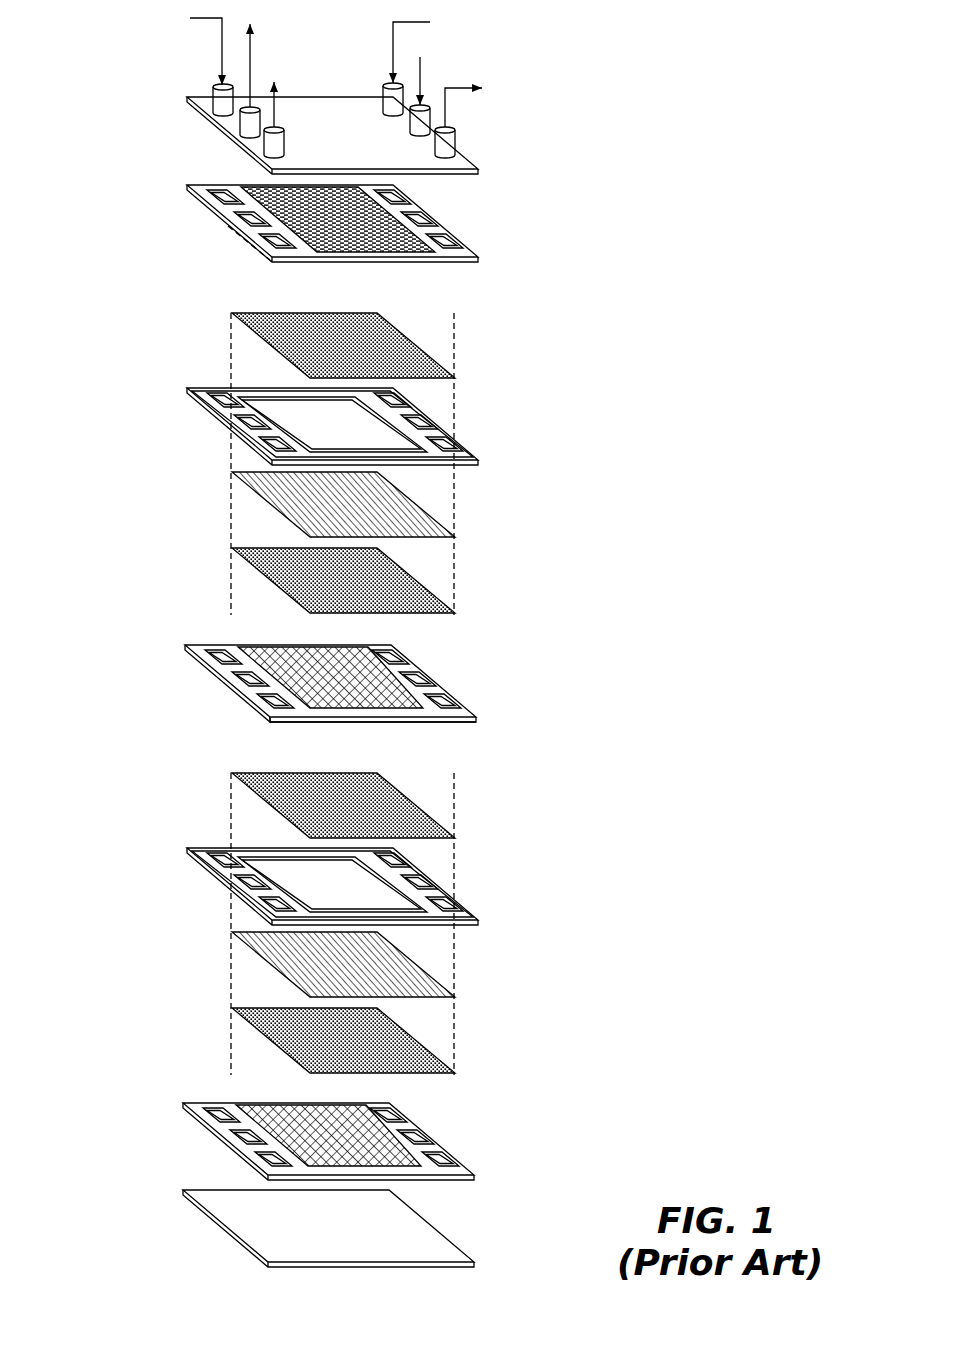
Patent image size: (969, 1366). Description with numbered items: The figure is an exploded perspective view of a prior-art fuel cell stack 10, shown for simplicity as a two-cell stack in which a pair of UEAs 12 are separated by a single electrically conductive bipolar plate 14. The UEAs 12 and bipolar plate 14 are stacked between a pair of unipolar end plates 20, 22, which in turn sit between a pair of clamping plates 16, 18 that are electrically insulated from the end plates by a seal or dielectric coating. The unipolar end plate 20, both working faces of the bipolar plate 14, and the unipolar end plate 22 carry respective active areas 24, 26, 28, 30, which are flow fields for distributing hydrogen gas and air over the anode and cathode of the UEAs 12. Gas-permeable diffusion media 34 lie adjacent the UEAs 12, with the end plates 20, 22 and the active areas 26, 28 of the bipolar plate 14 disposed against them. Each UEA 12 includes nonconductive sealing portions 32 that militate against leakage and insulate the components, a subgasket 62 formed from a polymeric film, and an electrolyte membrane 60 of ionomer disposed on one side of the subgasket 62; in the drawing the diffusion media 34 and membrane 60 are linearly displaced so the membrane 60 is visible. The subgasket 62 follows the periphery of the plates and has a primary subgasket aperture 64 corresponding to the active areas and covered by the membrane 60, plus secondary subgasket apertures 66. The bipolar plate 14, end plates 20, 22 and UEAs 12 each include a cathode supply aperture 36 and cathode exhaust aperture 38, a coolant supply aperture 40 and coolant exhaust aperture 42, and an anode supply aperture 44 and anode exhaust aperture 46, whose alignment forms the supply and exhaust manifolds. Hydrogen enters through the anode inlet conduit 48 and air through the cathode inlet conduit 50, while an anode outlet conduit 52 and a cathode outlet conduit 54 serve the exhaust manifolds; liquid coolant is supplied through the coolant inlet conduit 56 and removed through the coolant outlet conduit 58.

The fuel cell stack 10 is at (672, 257).
The UEA 12 is at (465, 613).
The bipolar plate 14 is at (196, 665).
The clamping plate 16 is at (224, 133).
The clamping plate 18 is at (452, 1233).
The unipolar end plate 20 is at (217, 218).
The unipolar end plate 22 is at (425, 1122).
The active area 24 is at (228, 226).
The active area 26 is at (412, 655).
The active area 28 is at (278, 702).
The active area 30 is at (403, 1150).
The sealing portion 32 is at (212, 388).
The diffusion media 34 is at (250, 338).
The cathode supply aperture 36 is at (213, 650).
The cathode exhaust aperture 38 is at (458, 695).
The coolant supply aperture 40 is at (437, 670).
The coolant exhaust aperture 42 is at (237, 675).
The anode supply aperture 44 is at (405, 648).
The anode exhaust aperture 46 is at (257, 708).
The anode inlet conduit 48 is at (392, 98).
The cathode inlet conduit 50 is at (215, 97).
The anode outlet conduit 52 is at (268, 145).
The cathode outlet conduit 54 is at (445, 145).
The coolant inlet conduit 56 is at (415, 123).
The coolant outlet conduit 58 is at (245, 122).
The electrolyte membrane 60 is at (255, 495).
The subgasket 62 is at (210, 408).
The primary subgasket aperture 64 is at (383, 416).
The secondary subgasket apertures 66 is at (233, 457).